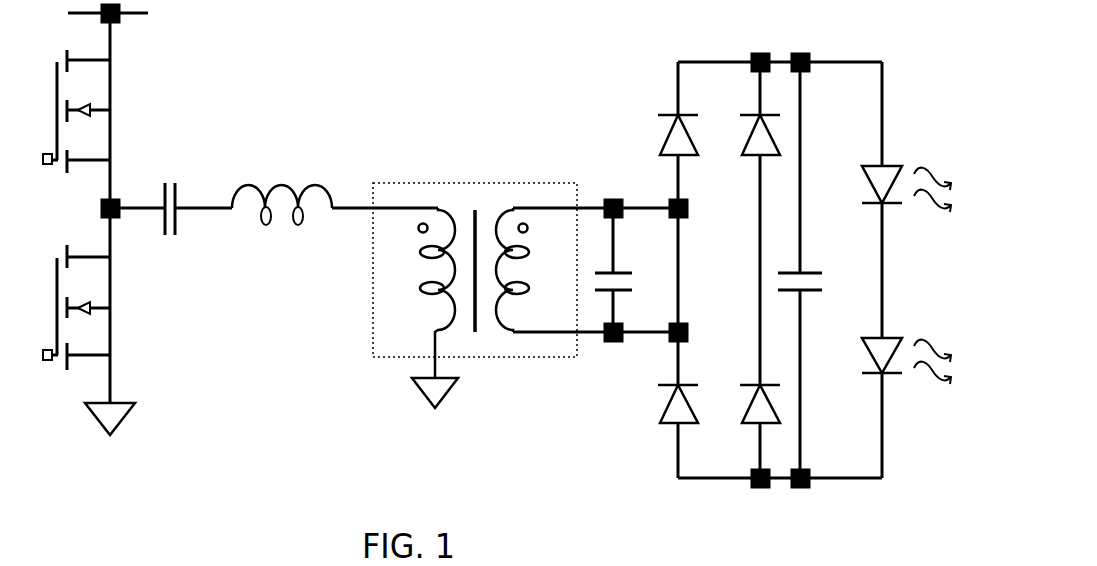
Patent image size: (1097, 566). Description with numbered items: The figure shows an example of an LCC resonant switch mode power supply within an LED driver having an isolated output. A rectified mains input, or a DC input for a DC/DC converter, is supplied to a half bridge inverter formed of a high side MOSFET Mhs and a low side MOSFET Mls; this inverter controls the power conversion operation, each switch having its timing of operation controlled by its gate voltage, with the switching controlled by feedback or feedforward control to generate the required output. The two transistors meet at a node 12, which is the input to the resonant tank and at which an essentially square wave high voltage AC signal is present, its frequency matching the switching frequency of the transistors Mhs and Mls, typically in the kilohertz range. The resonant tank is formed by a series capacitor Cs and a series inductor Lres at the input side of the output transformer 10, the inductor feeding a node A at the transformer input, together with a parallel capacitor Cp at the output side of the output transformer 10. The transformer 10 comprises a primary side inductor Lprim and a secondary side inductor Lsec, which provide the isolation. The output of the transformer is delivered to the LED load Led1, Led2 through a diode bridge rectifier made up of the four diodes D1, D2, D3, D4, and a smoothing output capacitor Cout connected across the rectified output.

The output transformer 10 is at (382, 183).
The node 12 is at (113, 200).
The high side MOSFET Mhs is at (88, 111).
The low side MOSFET Mls is at (84, 307).
The series capacitor Cs is at (170, 191).
The series inductor Lres is at (282, 187).
The node A is at (385, 192).
The primary side inductor Lprim is at (402, 308).
The secondary side inductor Lsec is at (543, 270).
The parallel capacitor Cp is at (626, 270).
The diode D1 is at (661, 135).
The diode D2 is at (742, 135).
The diode D3 is at (661, 404).
The diode D4 is at (742, 404).
The smoothing output capacitor Cout is at (823, 267).
The LED load Led1 is at (910, 167).
The LED load Led2 is at (910, 340).